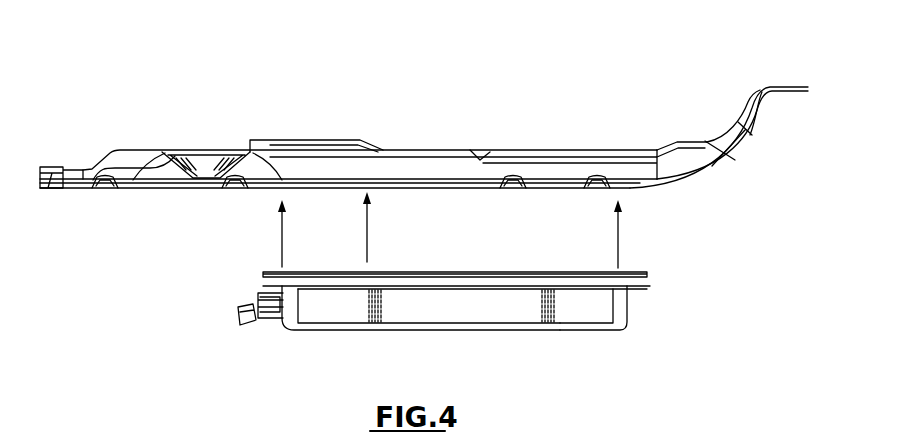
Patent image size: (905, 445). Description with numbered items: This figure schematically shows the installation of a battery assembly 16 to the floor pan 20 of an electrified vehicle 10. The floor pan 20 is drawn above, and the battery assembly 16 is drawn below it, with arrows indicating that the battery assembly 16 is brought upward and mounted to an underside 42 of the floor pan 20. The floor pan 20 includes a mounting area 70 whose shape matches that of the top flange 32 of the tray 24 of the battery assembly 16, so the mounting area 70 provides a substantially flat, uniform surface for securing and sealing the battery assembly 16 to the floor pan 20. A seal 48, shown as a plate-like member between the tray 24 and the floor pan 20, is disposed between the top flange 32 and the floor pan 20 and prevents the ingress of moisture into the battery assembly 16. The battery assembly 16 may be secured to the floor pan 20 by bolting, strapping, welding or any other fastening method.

The electrified vehicle 10 is at (385, 55).
The floor pan 20 is at (413, 165).
The mounting area 70 is at (307, 148).
The underside 42 is at (367, 226).
The seal 48 is at (445, 271).
The battery assembly 16 is at (453, 314).
The tray 24 is at (572, 310).
The top flange 32 is at (645, 291).